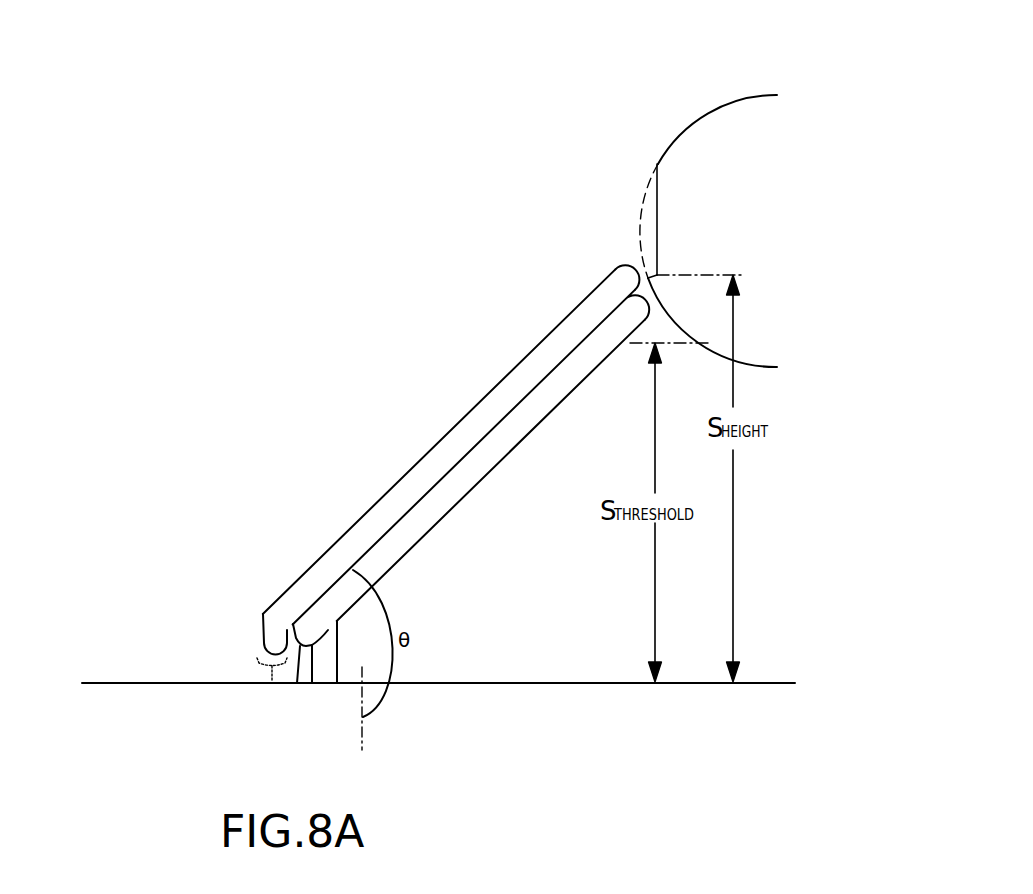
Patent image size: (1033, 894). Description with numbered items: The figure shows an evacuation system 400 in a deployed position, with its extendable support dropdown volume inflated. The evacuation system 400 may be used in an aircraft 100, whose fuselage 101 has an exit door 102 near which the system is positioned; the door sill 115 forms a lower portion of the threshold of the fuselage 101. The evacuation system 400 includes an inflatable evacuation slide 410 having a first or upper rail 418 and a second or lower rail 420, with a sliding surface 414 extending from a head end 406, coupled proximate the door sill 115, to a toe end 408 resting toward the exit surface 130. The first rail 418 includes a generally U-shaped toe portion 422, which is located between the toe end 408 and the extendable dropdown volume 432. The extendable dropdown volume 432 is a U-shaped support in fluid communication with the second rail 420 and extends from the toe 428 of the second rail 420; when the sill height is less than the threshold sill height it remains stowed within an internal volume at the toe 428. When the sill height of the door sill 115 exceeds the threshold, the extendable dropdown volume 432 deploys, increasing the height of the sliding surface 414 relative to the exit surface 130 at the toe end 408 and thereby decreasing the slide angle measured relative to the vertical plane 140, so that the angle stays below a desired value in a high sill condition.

The aircraft 100 is at (697, 184).
The fuselage 101 is at (683, 132).
The exit door 102 is at (658, 187).
The door sill 115 is at (653, 268).
The exit surface 130 is at (98, 683).
The vertical plane 140 is at (362, 745).
The evacuation system 400 is at (421, 448).
The head end 406 is at (633, 267).
The toe end 408 is at (263, 627).
The inflatable evacuation slide 410 is at (421, 426).
The sliding surface 414 is at (325, 598).
The first rail 418 is at (515, 385).
The second rail 420 is at (523, 420).
The toe portion 422 is at (272, 683).
The toe 428 is at (297, 686).
The extendable dropdown volume 432 is at (327, 670).